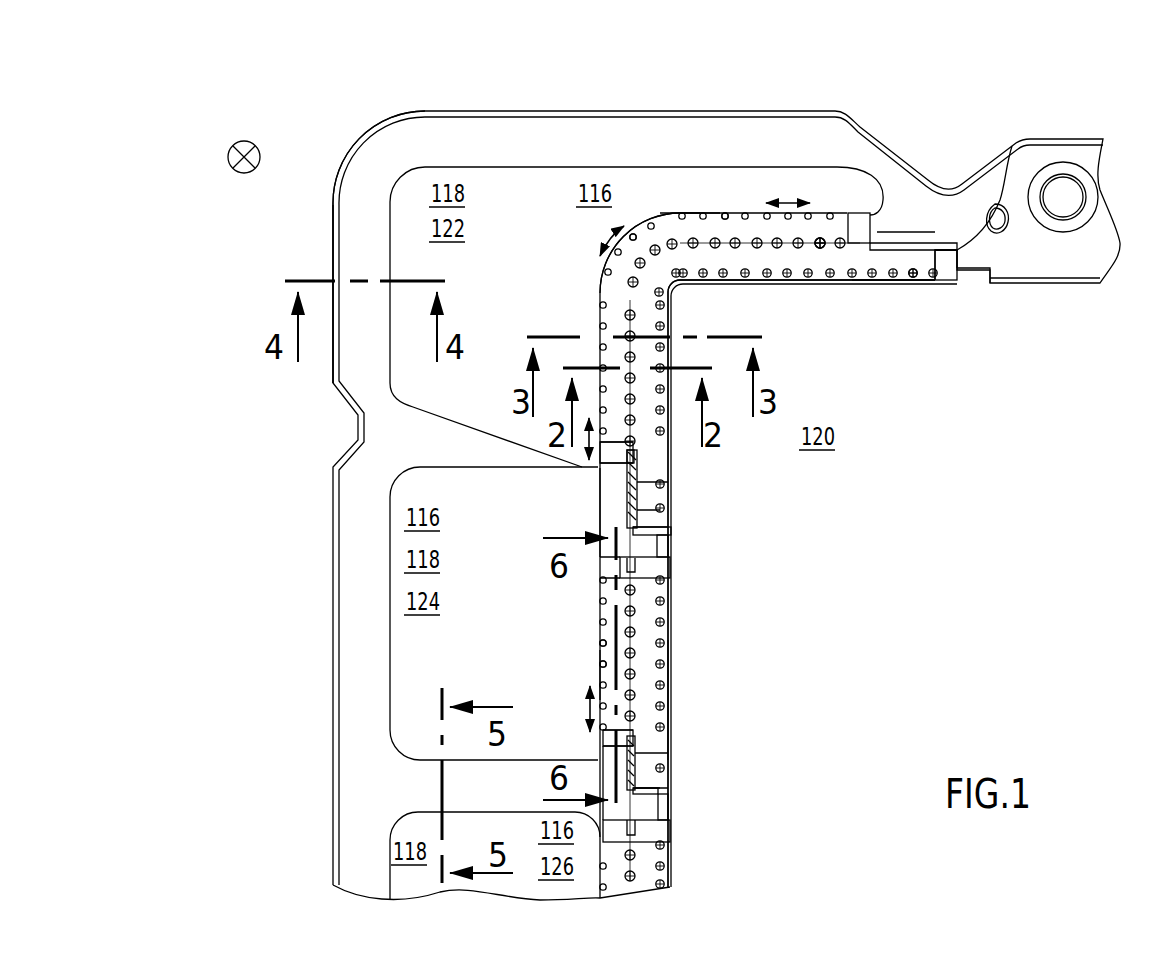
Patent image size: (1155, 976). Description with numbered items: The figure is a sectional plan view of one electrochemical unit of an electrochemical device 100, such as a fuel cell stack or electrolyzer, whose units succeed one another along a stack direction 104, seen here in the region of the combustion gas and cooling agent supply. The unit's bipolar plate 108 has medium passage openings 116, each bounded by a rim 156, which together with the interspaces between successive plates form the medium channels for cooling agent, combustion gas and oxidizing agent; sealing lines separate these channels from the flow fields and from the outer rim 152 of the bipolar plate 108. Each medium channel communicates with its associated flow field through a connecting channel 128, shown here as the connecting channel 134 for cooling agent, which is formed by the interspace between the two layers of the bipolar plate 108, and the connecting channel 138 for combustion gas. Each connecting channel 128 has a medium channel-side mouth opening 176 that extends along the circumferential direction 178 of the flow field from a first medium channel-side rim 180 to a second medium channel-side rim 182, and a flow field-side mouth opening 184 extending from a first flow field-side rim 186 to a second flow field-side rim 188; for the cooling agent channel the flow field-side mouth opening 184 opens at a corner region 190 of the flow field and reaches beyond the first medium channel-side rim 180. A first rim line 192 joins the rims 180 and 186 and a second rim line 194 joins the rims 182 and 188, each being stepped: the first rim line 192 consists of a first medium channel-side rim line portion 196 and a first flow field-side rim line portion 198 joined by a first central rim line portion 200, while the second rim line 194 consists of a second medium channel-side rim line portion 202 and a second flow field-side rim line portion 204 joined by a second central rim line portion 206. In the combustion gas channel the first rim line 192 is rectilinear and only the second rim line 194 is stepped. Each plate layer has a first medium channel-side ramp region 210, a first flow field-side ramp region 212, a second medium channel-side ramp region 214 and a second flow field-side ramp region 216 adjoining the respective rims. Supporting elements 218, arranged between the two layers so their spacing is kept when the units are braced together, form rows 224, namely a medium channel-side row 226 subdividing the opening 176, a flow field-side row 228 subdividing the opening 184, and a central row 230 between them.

The electrochemical device 100 is at (352, 135).
The stack direction 104 is at (233, 147).
The bipolar plate 108 is at (390, 111).
The medium passage opening 116 is at (768, 555).
The connecting channel 128 is at (643, 222).
The connecting channel for cooling agent 134 is at (693, 208).
The connecting channel for combustion gas 138 is at (598, 632).
The outer rim 152 is at (333, 238).
The rim 156 is at (390, 257).
The medium channel-side mouth opening 176 is at (742, 207).
The circumferential direction 178 is at (605, 240).
The first medium channel-side rim 180 is at (870, 222).
The second medium channel-side rim 182 is at (617, 477).
The flow field-side mouth opening 184 is at (805, 287).
The first flow field-side rim 186 is at (958, 272).
The second flow field-side rim 188 is at (655, 535).
The corner region 190 is at (681, 289).
The first rim line 192 is at (905, 225).
The second rim line 194 is at (612, 480).
The first medium channel-side rim line portion 196 is at (876, 232).
The first flow field-side rim line portion 198 is at (955, 252).
The first central rim line portion 200 is at (935, 240).
The second medium channel-side rim line portion 202 is at (614, 540).
The second flow field-side rim line portion 204 is at (645, 555).
The second central rim line portion 206 is at (1057, 126).
The first medium channel-side ramp region 210 is at (868, 227).
The first flow field-side ramp region 212 is at (946, 268).
The second medium channel-side ramp region 214 is at (607, 448).
The second flow field-side ramp region 216 is at (647, 520).
The supporting element 218 is at (723, 212).
The row of supporting elements 224 is at (677, 211).
The medium channel-side row of supporting elements 226 is at (600, 293).
The flow field-side row of supporting elements 228 is at (876, 287).
The central row of supporting elements 230 is at (822, 254).